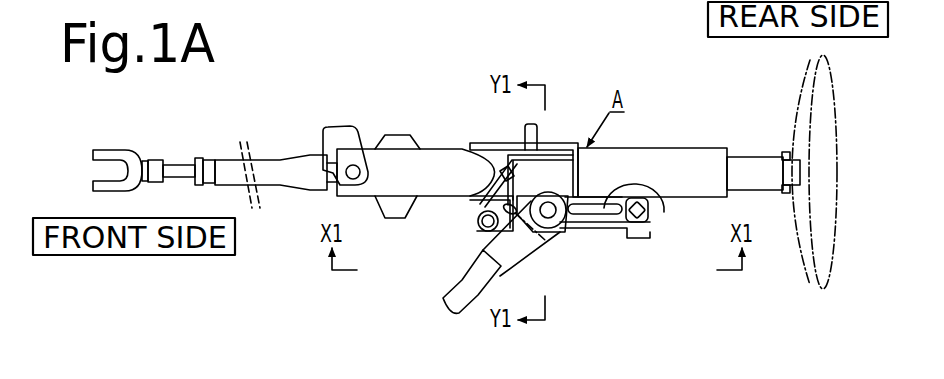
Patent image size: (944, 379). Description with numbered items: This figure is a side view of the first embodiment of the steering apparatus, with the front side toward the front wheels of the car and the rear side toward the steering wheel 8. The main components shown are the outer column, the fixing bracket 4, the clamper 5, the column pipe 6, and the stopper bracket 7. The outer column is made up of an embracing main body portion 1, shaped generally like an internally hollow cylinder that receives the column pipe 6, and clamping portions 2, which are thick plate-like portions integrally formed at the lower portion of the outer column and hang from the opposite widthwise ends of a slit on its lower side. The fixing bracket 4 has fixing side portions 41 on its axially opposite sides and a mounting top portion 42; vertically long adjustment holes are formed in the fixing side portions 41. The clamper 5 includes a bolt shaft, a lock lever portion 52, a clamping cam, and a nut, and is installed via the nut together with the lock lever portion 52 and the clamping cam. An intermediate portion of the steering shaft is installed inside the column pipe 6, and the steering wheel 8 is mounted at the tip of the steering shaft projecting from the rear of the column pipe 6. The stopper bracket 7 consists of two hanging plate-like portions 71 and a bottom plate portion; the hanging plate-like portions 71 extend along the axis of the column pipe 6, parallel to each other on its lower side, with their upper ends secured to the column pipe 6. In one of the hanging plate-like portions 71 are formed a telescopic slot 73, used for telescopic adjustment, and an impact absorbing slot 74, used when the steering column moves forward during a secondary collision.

The embracing main body portion 1 is at (567, 145).
The clamping portion 2 is at (472, 205).
The fixing bracket 4 is at (569, 244).
The fixing side portion 41 is at (548, 241).
The mounting top portion 42 is at (524, 130).
The clamper 5 is at (521, 248).
The lock lever portion 52 is at (478, 271).
The column pipe 6 is at (652, 148).
The stopper bracket 7 is at (617, 234).
The hanging plate-like portion 71 is at (585, 223).
The telescopic slot 73 is at (497, 204).
The impact absorbing slot 74 is at (652, 196).
The steering wheel 8 is at (837, 108).